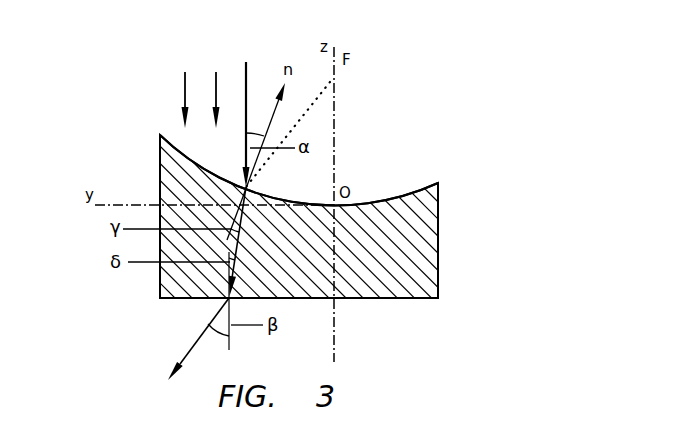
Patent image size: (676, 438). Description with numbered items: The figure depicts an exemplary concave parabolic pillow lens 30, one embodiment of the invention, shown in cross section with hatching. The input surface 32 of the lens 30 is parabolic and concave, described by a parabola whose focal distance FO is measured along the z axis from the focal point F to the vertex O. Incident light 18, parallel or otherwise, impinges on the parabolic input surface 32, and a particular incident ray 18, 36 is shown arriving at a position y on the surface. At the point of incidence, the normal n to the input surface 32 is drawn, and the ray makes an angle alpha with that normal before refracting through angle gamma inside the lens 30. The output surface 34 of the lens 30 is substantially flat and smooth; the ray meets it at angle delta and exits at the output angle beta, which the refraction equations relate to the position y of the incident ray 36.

The incident light 18 is at (183, 87).
The incident ray 36 is at (247, 77).
The input surface 32 is at (390, 184).
The parabolic pillow lens 30 is at (438, 215).
The output surface 34 is at (390, 313).